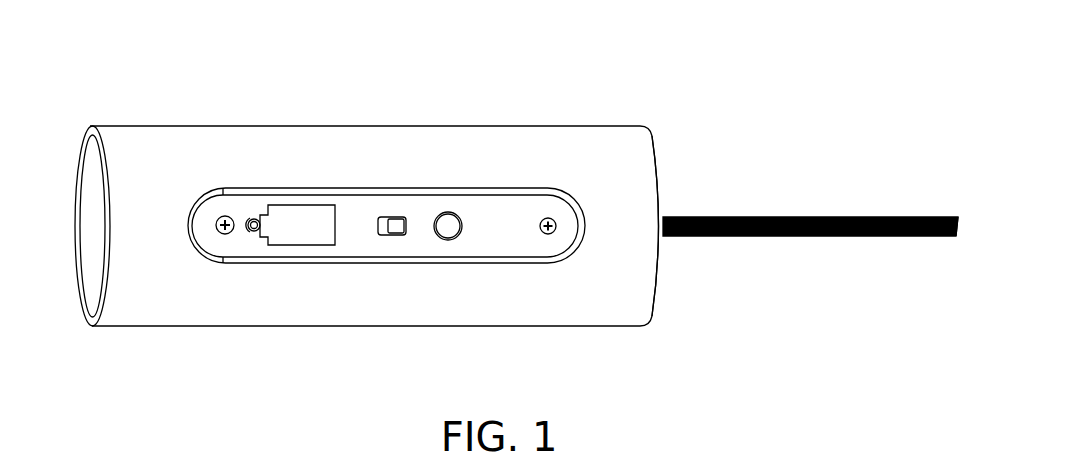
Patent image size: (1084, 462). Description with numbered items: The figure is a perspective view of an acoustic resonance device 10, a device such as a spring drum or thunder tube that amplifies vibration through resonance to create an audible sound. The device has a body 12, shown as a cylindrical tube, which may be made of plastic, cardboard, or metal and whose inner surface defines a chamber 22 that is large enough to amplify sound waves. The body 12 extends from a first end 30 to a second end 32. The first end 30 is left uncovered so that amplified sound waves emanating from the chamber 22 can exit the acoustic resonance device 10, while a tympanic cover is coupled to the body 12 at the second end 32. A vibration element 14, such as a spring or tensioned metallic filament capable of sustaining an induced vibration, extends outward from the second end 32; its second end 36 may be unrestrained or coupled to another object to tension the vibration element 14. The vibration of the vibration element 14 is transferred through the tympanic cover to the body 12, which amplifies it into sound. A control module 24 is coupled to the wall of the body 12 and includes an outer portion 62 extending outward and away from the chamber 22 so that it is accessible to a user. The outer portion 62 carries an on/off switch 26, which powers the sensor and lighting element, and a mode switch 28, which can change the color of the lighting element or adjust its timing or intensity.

The acoustic resonance device 10 is at (143, 110).
The body 12 is at (382, 126).
The vibration element 14 is at (808, 217).
The chamber 22 is at (88, 261).
The control module 24 is at (294, 188).
The on/off switch 26 is at (383, 236).
The mode switch 28 is at (455, 239).
The first end 30 is at (75, 192).
The second end 32 is at (663, 183).
The second end 36 is at (958, 237).
The outer portion 62 is at (580, 212).